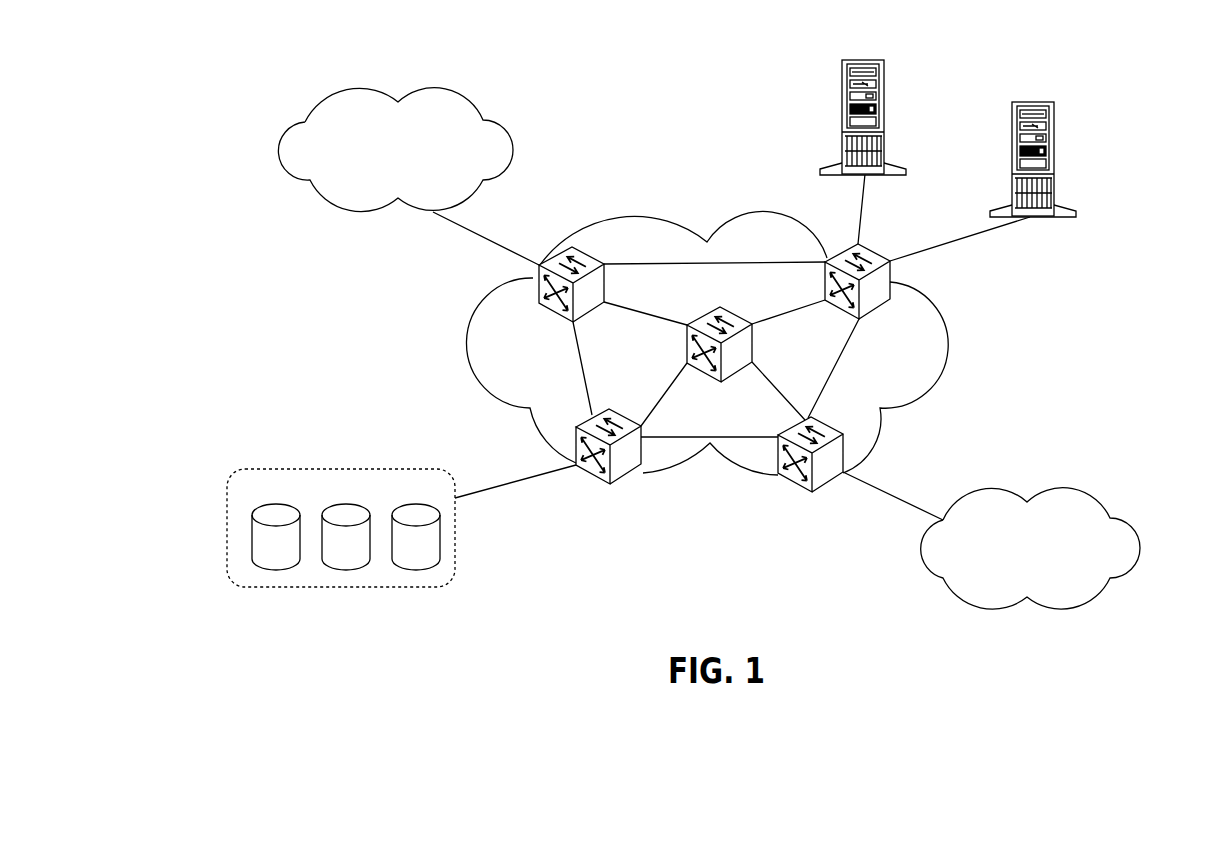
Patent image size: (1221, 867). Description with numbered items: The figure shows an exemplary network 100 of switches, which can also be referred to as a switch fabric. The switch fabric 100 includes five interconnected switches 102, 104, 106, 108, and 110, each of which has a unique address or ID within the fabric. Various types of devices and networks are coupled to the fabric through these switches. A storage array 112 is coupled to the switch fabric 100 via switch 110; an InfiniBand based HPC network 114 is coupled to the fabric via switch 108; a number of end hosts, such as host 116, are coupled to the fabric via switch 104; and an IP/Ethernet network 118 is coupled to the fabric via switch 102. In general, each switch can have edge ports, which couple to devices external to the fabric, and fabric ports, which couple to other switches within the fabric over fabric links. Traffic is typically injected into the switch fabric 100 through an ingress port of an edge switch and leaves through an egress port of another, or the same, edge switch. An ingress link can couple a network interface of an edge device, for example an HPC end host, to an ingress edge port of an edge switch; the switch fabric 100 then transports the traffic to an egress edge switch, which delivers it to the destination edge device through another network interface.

The network 100 is at (952, 343).
The switch 102 is at (810, 497).
The switch 104 is at (891, 300).
The switch 106 is at (722, 305).
The switch 108 is at (538, 305).
The switch 110 is at (606, 415).
The storage array 112 is at (433, 587).
The InfiniBand based HPC network 114 is at (280, 150).
The host 116 is at (1080, 211).
The IP/Ethernet network 118 is at (1147, 547).